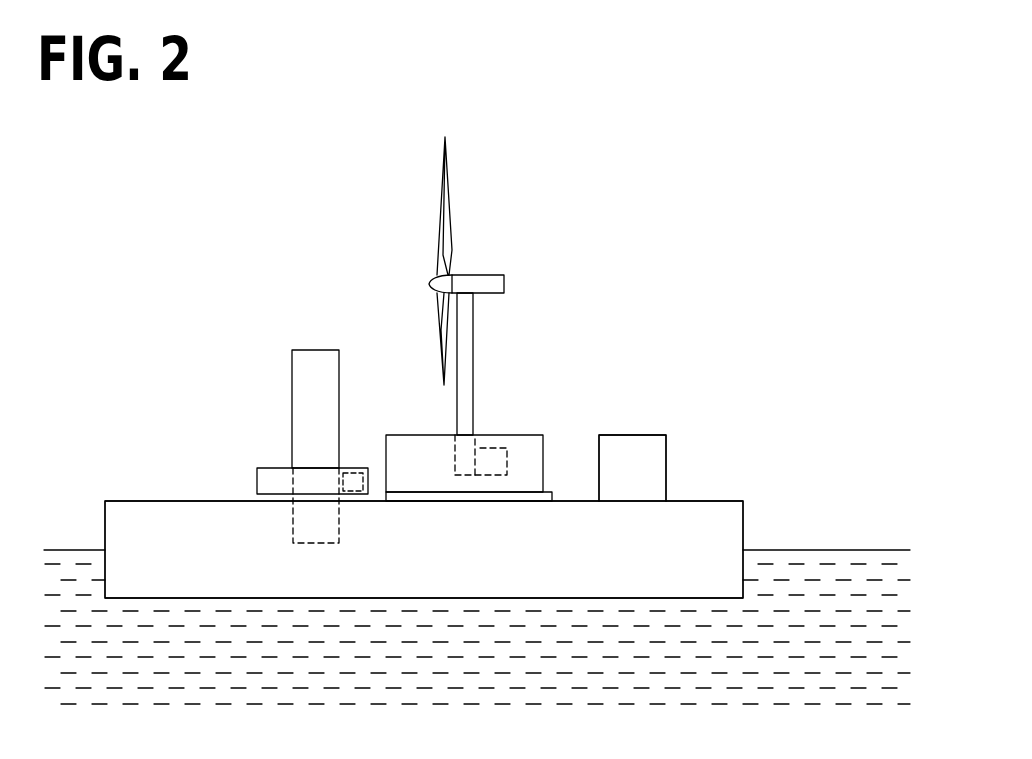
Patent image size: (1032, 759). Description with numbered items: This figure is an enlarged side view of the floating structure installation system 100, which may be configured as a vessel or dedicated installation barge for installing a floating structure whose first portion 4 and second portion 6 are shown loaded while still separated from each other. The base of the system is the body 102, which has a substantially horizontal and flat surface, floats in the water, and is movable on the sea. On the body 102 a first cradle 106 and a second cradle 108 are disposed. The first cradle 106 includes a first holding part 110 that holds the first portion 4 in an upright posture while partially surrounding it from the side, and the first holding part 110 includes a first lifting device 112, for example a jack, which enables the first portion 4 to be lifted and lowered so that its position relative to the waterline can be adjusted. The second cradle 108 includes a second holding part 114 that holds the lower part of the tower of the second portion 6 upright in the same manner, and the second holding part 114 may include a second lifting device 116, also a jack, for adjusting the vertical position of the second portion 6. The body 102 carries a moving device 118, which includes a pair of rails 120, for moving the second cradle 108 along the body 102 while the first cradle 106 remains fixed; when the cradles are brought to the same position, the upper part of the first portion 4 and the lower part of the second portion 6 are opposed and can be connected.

The first portion 4 is at (324, 338).
The second portion 6 is at (490, 265).
The floating structure installation system 100 is at (716, 336).
The body 102 is at (743, 512).
The first cradle 106 is at (262, 468).
The second cradle 108 is at (410, 434).
The first holding part 110 is at (349, 466).
The first lifting device 112 is at (356, 501).
The second holding part 114 is at (483, 432).
The second lifting device 116 is at (505, 447).
The moving device 118 is at (549, 498).
The rails 120 is at (632, 468).